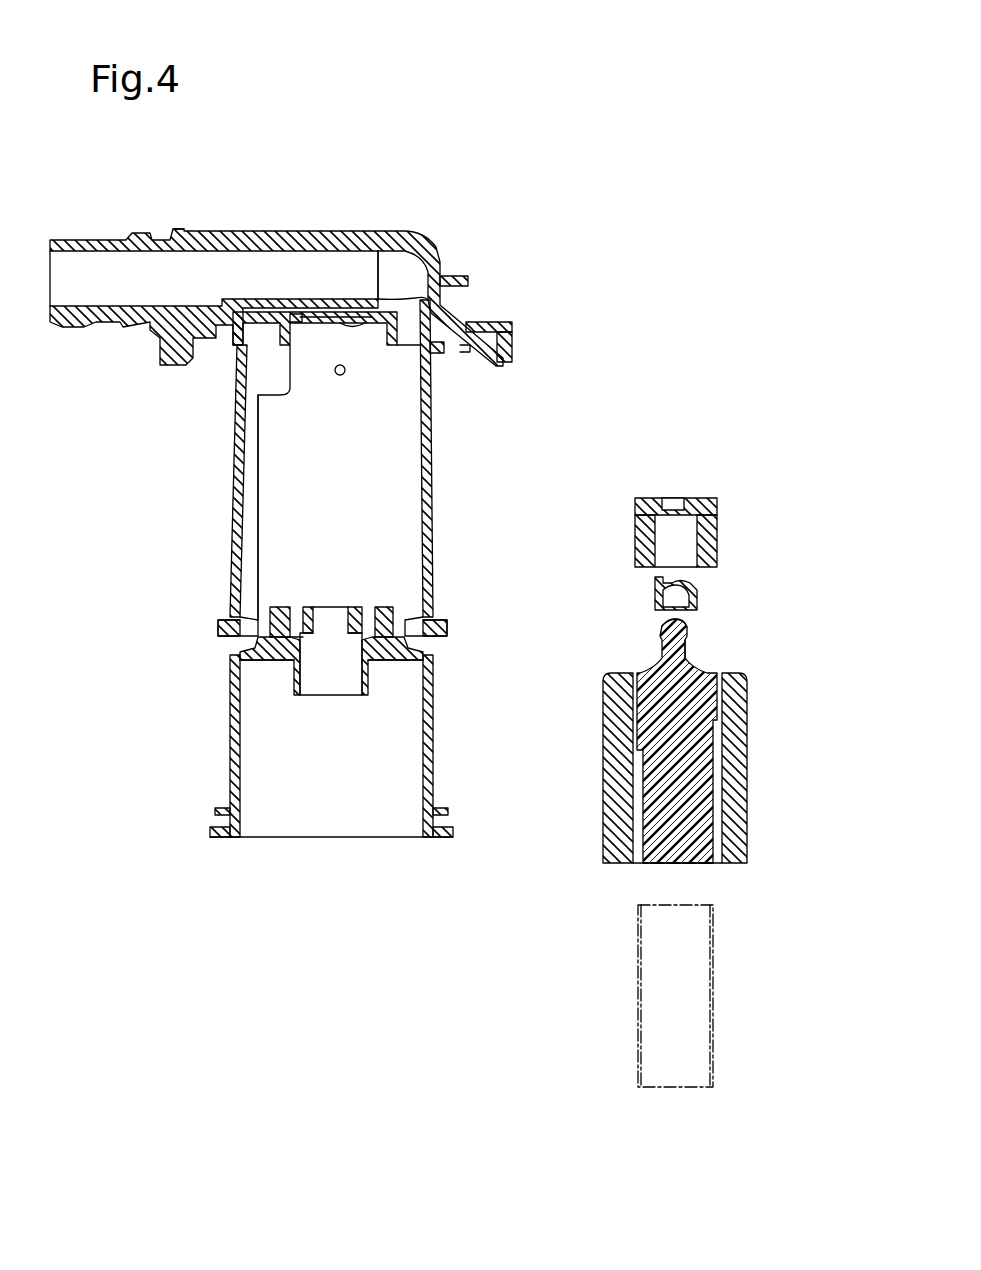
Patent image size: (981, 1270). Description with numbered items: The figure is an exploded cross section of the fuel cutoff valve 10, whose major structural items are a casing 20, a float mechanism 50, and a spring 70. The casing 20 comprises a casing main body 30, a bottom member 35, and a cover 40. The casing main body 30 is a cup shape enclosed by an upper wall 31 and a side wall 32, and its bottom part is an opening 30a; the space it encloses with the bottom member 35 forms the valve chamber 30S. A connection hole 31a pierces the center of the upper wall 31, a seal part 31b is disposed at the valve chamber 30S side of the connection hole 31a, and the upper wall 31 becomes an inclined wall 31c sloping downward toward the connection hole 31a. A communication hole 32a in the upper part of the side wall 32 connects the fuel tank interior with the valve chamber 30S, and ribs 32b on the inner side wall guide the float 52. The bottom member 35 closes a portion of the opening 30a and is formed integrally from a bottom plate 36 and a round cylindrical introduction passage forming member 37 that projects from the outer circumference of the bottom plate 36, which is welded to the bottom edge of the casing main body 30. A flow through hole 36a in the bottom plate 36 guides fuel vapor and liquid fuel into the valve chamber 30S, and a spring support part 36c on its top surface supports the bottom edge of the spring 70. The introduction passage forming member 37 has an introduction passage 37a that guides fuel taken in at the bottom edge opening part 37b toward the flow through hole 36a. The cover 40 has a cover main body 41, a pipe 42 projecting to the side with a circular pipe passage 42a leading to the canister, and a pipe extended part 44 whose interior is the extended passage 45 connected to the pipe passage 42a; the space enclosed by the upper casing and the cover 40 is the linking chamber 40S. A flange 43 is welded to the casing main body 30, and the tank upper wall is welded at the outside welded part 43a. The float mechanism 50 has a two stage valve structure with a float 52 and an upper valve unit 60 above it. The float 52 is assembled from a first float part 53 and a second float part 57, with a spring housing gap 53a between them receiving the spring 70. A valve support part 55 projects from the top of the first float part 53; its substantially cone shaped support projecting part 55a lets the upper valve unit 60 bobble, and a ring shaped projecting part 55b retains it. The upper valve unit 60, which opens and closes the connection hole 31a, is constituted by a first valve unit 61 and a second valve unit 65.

The fuel cutoff valve 10 is at (485, 238).
The casing 20 is at (142, 520).
The casing main body 30 is at (231, 563).
The valve chamber 30S is at (357, 463).
The opening 30a is at (428, 612).
The upper wall 31 is at (222, 306).
The connection hole 31a is at (318, 320).
The seal part 31b is at (356, 326).
The inclined wall 31c is at (292, 318).
The side wall 32 is at (433, 548).
The communication hole 32a is at (346, 370).
The ribs 32b is at (258, 485).
The bottom member 35 is at (230, 748).
The bottom plate 36 is at (423, 637).
The flow through hole 36a is at (326, 613).
The spring support part 36c is at (297, 619).
The introduction passage forming member 37 is at (433, 770).
The introduction passage 37a is at (364, 757).
The bottom edge opening part 37b is at (372, 838).
The cover 40 is at (175, 365).
The linking chamber 40S is at (399, 266).
The cover main body 41 is at (462, 320).
The pipe 42 is at (188, 229).
The pipe passage 42a is at (146, 290).
The flange 43 is at (472, 320).
The outside welded part 43a is at (497, 355).
The pipe extended part 44 is at (377, 292).
The extended passage 45 is at (248, 229).
The float mechanism 50 is at (740, 486).
The float 52 is at (795, 705).
The first float part 53 is at (716, 708).
The spring housing gap 53a is at (637, 803).
The valve support part 55 is at (688, 627).
The support projecting part 55a is at (666, 636).
The ring shaped projecting part 55b is at (690, 640).
The second float part 57 is at (749, 742).
The upper valve unit 60 is at (772, 512).
The first valve unit 61 is at (717, 522).
The second valve unit 65 is at (698, 592).
The spring 70 is at (713, 995).